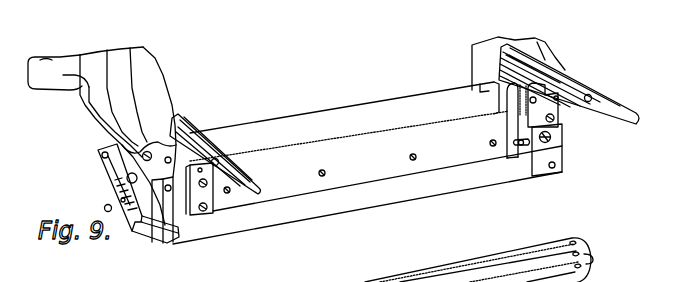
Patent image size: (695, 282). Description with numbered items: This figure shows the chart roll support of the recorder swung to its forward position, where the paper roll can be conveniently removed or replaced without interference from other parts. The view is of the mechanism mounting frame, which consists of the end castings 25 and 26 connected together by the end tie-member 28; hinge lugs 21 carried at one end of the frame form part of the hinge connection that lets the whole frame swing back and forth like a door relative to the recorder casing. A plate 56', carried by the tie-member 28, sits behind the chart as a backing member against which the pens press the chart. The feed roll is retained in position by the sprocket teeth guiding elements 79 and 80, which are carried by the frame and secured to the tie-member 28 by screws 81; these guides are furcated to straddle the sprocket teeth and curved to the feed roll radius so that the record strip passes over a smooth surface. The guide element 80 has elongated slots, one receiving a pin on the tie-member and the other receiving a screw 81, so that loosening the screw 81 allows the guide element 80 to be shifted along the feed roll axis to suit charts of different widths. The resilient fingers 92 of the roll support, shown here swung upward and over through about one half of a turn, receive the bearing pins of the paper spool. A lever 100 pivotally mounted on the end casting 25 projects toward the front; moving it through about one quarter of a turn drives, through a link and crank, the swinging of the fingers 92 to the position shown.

The hinge lug 21 is at (48, 85).
The end casting 25 is at (150, 75).
The end casting 26 is at (546, 42).
The end tie-member 28 is at (345, 198).
The plate 56' is at (426, 189).
The sprocket teeth guiding element 79 is at (200, 215).
The sprocket teeth guiding element 80 is at (510, 150).
The screw 81 is at (550, 142).
The resilient finger 92 is at (612, 108).
The lever 100 is at (145, 238).